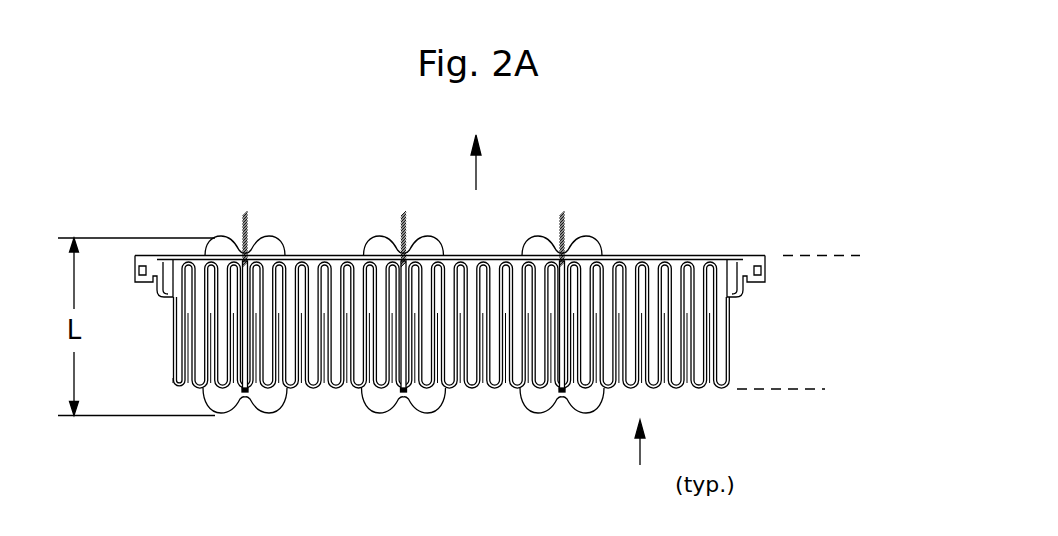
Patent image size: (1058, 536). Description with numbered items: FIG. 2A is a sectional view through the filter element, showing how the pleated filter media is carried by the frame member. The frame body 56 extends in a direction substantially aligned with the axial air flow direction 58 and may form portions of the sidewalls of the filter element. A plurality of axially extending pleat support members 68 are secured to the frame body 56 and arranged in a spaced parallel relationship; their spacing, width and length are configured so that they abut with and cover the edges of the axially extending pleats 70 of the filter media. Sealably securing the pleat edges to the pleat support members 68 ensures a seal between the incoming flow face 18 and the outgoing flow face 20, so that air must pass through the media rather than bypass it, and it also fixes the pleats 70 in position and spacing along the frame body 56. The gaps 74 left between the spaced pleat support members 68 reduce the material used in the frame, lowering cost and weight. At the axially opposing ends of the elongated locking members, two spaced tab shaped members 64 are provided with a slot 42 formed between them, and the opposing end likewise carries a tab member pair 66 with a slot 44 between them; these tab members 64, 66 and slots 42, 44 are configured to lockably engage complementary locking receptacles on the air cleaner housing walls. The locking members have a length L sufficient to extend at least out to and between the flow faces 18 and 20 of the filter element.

The incoming flow face 18 is at (767, 393).
The outgoing flow face 20 is at (803, 250).
The slot 42 is at (562, 251).
The slot 44 is at (561, 400).
The frame body 56 is at (652, 256).
The axial air flow direction 58 is at (472, 172).
The tab shaped members 64 is at (585, 240).
The tab member pair 66 is at (590, 413).
The axially extending pleat support members 68 is at (662, 391).
The axially extending pleats 70 is at (713, 363).
The gaps 74 is at (188, 387).